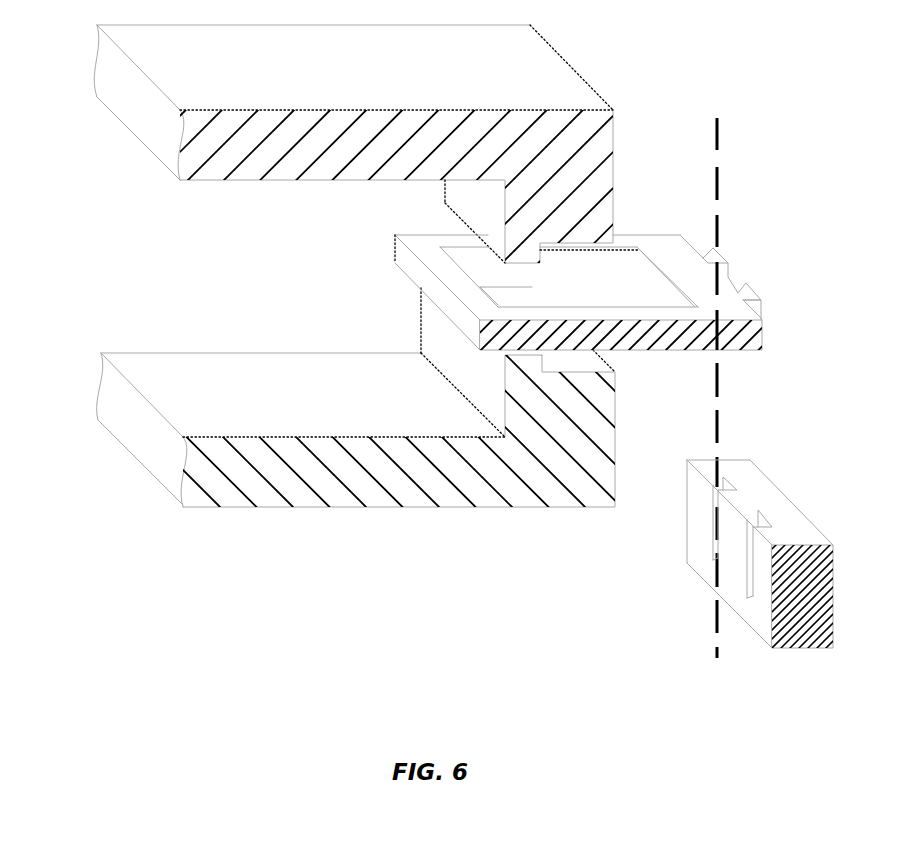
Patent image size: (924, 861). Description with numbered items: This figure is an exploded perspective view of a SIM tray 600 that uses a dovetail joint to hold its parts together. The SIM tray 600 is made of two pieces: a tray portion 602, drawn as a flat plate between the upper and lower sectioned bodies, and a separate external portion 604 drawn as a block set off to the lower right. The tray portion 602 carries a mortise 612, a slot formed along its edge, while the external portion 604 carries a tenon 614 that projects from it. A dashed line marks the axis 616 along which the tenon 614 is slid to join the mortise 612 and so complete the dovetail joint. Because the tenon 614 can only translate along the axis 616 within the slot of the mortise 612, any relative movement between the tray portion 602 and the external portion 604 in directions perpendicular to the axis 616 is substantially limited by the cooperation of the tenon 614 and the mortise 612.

The SIM tray 600 is at (374, 250).
The tray portion 602 is at (665, 245).
The external portion 604 is at (812, 528).
The mortise 612 is at (752, 287).
The tenon 614 is at (728, 481).
The axis 616 is at (741, 384).